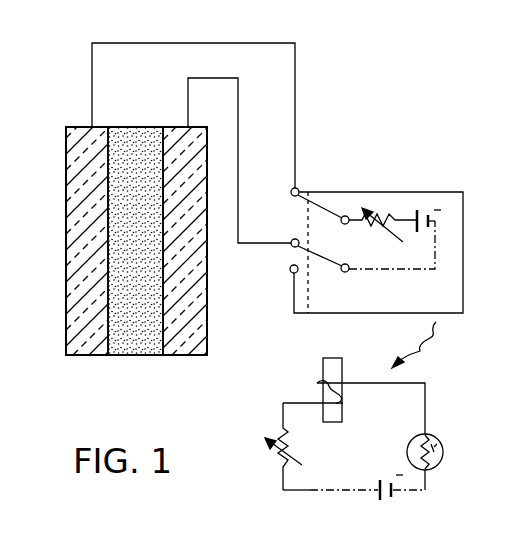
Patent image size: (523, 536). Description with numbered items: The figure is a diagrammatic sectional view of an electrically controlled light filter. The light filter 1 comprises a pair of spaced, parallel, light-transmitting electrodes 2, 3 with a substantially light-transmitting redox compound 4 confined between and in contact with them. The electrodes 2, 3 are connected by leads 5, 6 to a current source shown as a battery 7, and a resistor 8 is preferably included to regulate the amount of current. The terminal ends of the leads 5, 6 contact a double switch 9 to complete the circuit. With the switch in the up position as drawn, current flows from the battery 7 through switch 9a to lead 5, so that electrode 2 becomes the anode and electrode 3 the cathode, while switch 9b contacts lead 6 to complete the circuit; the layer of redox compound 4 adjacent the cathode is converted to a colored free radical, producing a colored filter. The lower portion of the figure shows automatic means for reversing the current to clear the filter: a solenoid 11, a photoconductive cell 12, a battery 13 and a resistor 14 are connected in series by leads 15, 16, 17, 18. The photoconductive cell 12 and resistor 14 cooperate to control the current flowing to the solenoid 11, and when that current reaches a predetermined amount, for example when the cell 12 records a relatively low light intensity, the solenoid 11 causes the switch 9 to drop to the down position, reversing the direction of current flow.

The light filter 1 is at (63, 243).
The electrode 2 is at (81, 128).
The electrode 3 is at (199, 131).
The redox compound 4 is at (129, 128).
The lead 5 is at (92, 62).
The lead 6 is at (188, 88).
The battery 7 is at (421, 236).
The resistor 8 is at (396, 236).
The double switch 9 is at (305, 226).
The switch 9a is at (292, 194).
The switch 9b is at (292, 247).
The solenoid 11 is at (329, 368).
The photoconductive cell 12 is at (439, 462).
The battery 13 is at (386, 501).
The resistor 14 is at (276, 452).
The lead 15 is at (427, 394).
The lead 16 is at (427, 491).
The lead 17 is at (301, 490).
The lead 18 is at (283, 403).